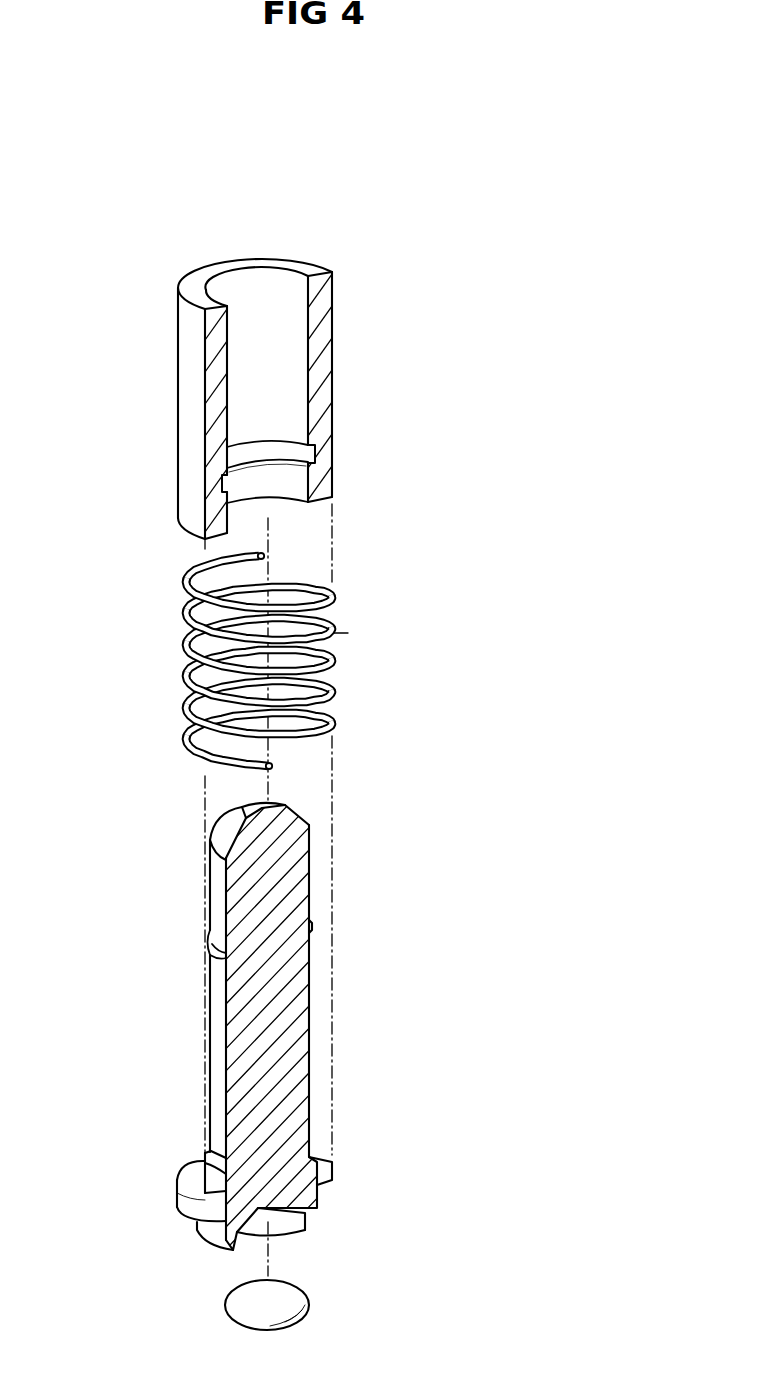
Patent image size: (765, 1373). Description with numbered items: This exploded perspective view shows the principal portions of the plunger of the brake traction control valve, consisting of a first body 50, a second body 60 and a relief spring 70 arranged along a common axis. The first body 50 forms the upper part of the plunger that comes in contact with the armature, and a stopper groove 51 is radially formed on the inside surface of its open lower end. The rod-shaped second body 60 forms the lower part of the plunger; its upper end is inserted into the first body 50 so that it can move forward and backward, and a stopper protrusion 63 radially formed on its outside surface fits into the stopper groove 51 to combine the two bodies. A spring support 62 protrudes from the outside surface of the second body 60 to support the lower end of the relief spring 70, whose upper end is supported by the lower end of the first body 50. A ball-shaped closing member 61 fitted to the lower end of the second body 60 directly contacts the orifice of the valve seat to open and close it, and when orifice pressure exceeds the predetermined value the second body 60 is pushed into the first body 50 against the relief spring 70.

The first body 50 is at (408, 356).
The stopper groove 51 is at (295, 449).
The relief spring 70 is at (430, 597).
The second body 60 is at (428, 1002).
The stopper protrusion 63 is at (217, 948).
The spring support 62 is at (190, 1203).
The closing member 61 is at (306, 1298).